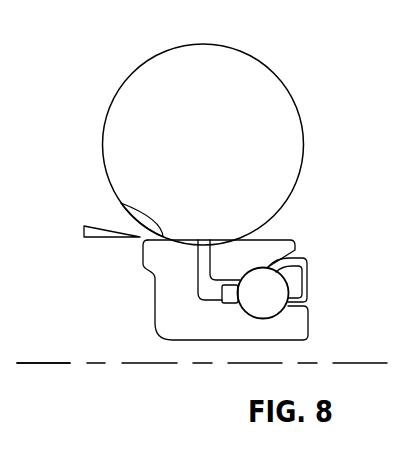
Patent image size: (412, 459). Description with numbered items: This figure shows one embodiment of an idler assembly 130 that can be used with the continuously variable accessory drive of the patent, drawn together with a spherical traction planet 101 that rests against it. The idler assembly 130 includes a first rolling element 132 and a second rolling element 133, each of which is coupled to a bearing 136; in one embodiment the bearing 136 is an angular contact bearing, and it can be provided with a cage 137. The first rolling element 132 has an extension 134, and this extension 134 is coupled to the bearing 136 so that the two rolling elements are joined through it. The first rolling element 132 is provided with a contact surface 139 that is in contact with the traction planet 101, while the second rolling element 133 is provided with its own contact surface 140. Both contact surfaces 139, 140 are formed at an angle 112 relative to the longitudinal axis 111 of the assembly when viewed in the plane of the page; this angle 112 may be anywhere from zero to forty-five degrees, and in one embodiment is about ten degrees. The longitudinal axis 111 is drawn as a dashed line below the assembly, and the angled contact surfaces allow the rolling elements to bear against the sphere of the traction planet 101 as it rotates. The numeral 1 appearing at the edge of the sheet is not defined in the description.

The substrate 1 is at (35, 379).
The spherical traction planet 101 is at (271, 70).
The longitudinal axis 111 is at (355, 363).
The angle 112 is at (85, 229).
The idler assembly 130 is at (61, 213).
The first rolling element 132 is at (155, 310).
The second rolling element 133 is at (295, 246).
The extension 134 is at (228, 340).
The bearing 136 is at (284, 263).
The cage 137 is at (307, 290).
The contact surface 139 is at (121, 203).
The contact surface 140 is at (285, 238).